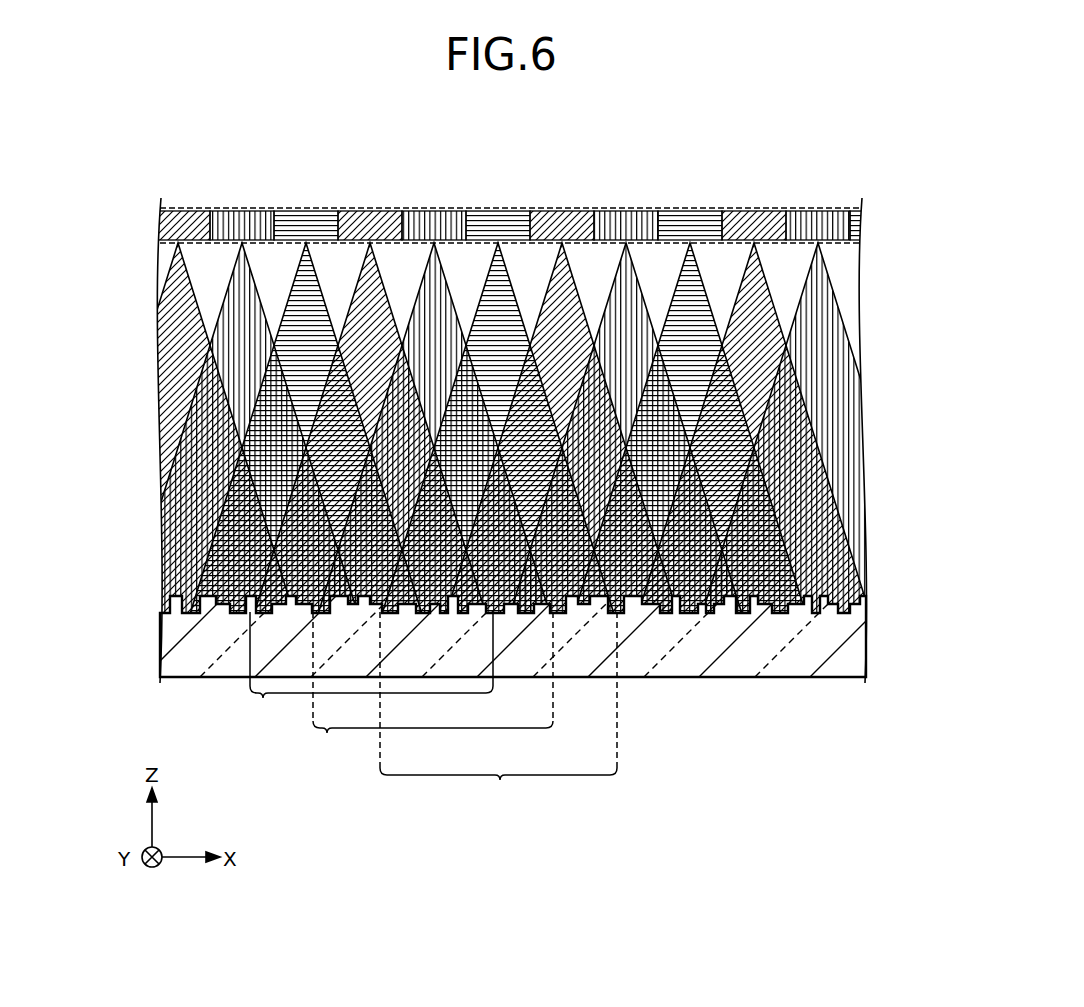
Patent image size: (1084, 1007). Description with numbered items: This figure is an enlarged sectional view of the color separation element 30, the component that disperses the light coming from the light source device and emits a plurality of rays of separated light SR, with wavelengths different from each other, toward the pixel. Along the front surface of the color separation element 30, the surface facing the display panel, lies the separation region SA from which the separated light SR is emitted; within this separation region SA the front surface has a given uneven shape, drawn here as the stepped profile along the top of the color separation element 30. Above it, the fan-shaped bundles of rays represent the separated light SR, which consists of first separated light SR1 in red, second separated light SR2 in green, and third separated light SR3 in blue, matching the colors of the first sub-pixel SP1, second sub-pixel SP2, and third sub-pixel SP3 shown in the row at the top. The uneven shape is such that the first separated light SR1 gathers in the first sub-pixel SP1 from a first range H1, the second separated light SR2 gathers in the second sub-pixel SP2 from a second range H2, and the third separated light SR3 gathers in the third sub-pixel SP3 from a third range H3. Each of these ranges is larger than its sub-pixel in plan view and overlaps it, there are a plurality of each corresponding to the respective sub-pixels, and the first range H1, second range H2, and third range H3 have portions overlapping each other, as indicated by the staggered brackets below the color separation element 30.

The separated light SR is at (158, 263).
The first separated light SR1 is at (357, 283).
The second separated light SR2 is at (425, 283).
The third separated light SR3 is at (490, 283).
The first sub-pixel SP1 is at (378, 208).
The second sub-pixel SP2 is at (443, 208).
The third sub-pixel SP3 is at (507, 208).
The separation region SA is at (838, 574).
The color separation element 30 is at (706, 677).
The first range H1 is at (370, 671).
The second range H2 is at (433, 688).
The third range H3 is at (498, 714).